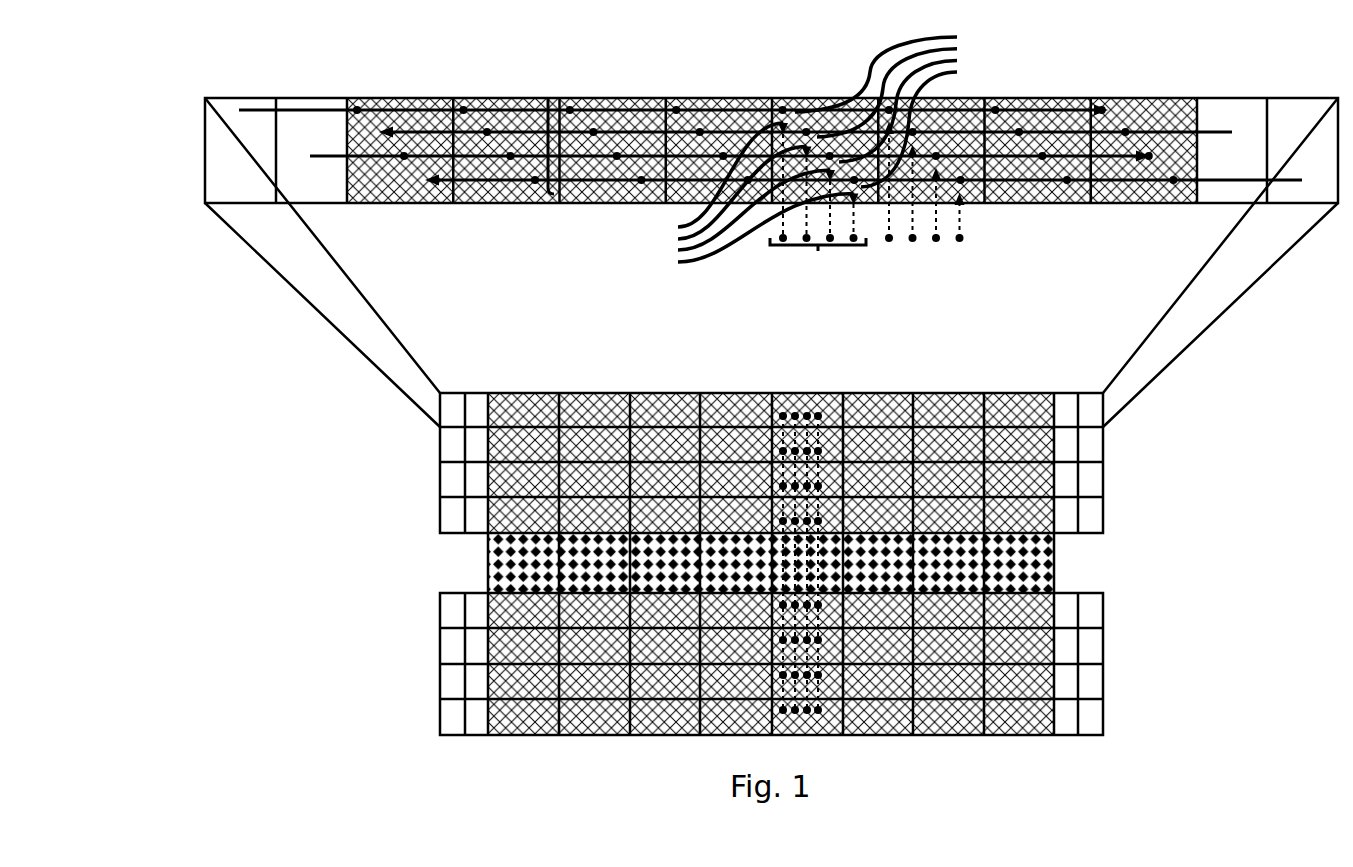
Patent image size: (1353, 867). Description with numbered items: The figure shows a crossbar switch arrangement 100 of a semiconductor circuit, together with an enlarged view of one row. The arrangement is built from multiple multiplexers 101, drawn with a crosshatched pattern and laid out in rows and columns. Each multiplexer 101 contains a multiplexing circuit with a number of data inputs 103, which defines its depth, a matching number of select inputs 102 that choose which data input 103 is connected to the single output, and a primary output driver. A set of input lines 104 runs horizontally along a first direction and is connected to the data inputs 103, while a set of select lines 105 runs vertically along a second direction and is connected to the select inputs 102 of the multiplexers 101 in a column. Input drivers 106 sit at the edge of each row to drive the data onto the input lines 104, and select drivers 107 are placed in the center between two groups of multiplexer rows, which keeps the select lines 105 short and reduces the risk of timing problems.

The crossbar switch arrangement 100 is at (1184, 716).
The multiplexer 101 is at (782, 107).
The select input 102 is at (738, 192).
The data input 103 is at (901, 139).
The input line 104 is at (543, 145).
The select line 105 is at (818, 204).
The input driver 106 is at (310, 116).
The select driver 107 is at (835, 540).